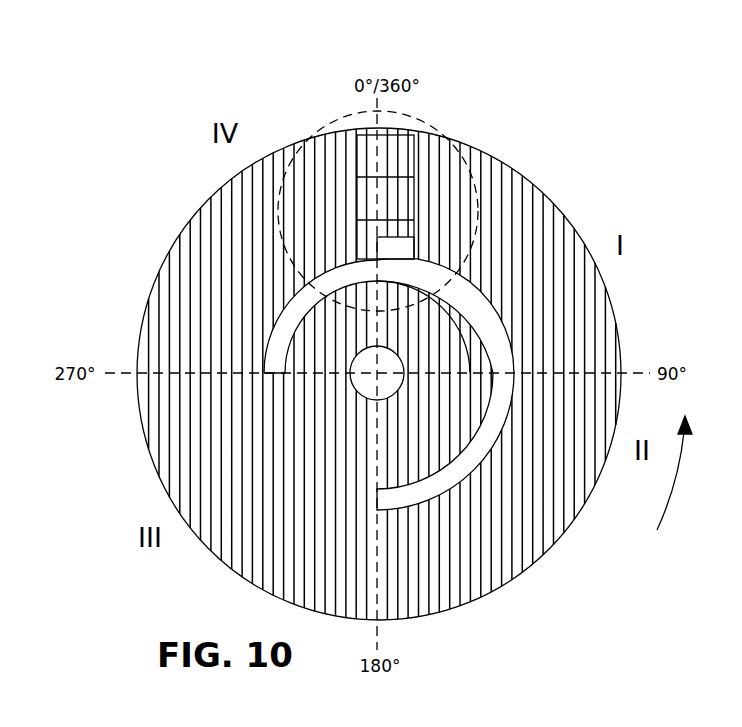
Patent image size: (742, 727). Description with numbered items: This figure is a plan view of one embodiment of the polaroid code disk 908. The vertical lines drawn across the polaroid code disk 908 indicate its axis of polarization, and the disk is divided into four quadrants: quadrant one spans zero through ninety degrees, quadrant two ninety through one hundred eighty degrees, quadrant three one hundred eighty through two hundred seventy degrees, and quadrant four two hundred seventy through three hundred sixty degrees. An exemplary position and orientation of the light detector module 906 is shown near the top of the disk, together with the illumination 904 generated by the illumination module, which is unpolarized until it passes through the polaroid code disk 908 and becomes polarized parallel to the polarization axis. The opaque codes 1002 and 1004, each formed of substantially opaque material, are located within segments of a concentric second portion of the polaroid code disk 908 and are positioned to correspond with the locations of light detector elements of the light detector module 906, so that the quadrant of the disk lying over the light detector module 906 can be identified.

The illumination 904 is at (425, 122).
The light detector module 906 is at (415, 195).
The polaroid code disk 908 is at (473, 522).
The opaque code 1002 is at (417, 507).
The opaque code 1004 is at (267, 333).